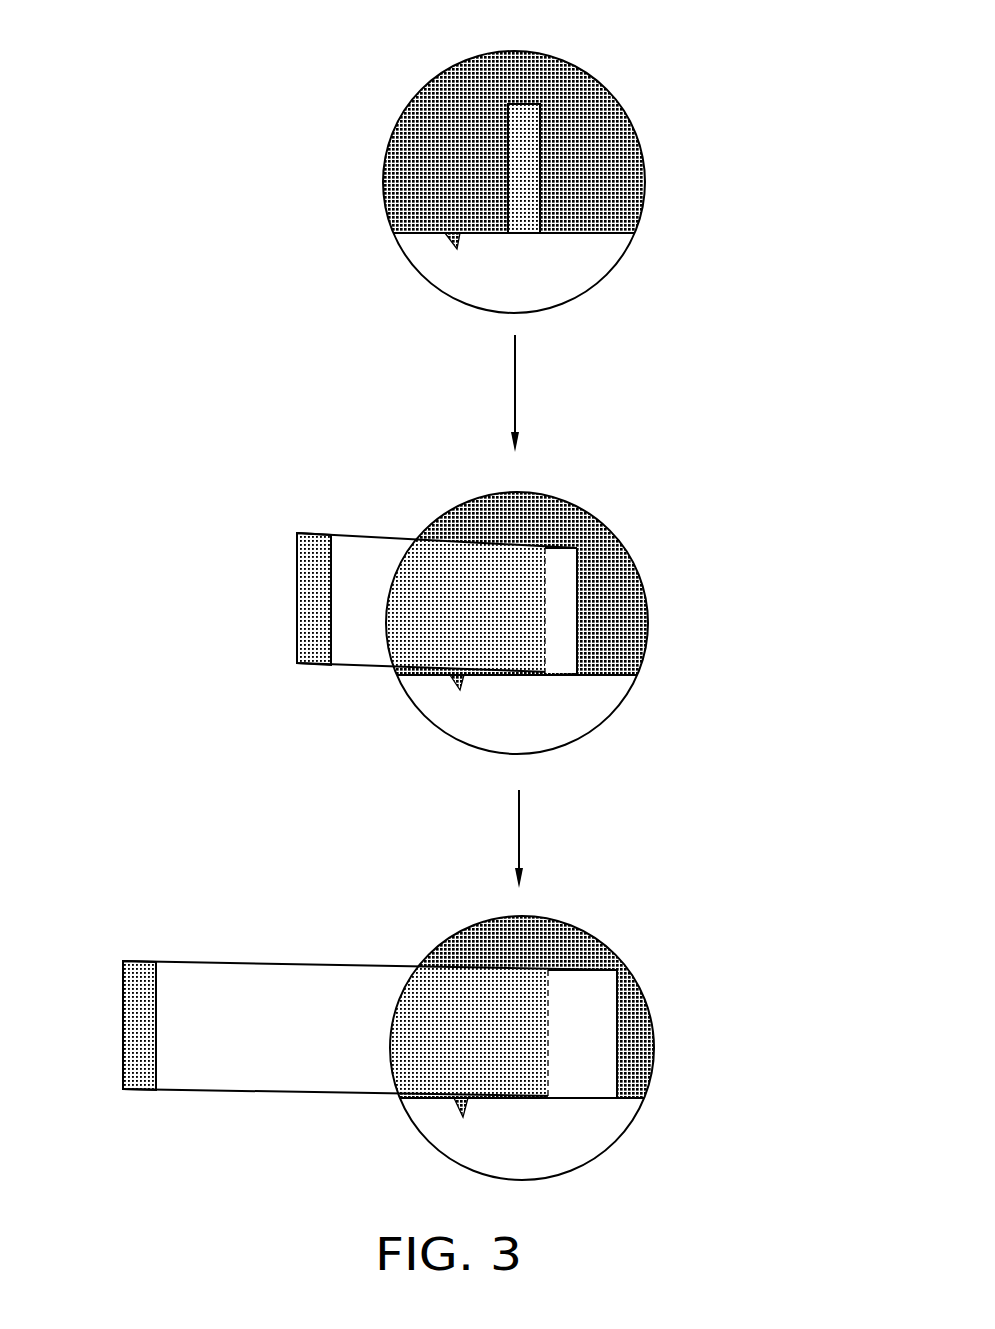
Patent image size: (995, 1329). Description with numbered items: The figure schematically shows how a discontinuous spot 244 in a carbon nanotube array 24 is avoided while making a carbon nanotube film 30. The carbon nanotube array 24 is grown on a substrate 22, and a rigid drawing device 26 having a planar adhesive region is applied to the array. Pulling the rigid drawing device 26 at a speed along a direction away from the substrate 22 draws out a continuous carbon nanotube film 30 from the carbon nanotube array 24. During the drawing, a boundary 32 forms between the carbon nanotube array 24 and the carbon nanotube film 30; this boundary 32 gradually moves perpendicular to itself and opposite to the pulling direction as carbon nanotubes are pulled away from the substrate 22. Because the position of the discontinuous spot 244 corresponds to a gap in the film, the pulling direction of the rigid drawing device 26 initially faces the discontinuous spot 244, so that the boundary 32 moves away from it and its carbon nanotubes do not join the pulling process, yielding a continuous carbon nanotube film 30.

The substrate 22 is at (575, 268).
The carbon nanotube array 24 is at (418, 115).
The rigid drawing device 26 is at (530, 112).
The discontinuous spot 244 is at (450, 244).
The carbon nanotube film 30 is at (368, 562).
The boundary 32 is at (578, 548).